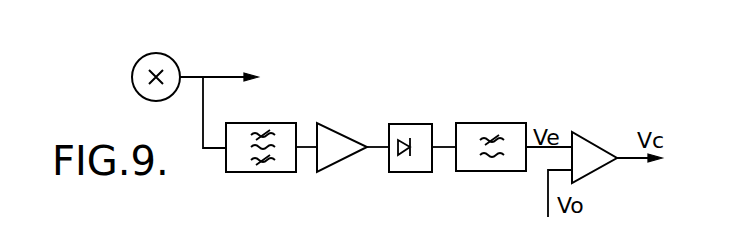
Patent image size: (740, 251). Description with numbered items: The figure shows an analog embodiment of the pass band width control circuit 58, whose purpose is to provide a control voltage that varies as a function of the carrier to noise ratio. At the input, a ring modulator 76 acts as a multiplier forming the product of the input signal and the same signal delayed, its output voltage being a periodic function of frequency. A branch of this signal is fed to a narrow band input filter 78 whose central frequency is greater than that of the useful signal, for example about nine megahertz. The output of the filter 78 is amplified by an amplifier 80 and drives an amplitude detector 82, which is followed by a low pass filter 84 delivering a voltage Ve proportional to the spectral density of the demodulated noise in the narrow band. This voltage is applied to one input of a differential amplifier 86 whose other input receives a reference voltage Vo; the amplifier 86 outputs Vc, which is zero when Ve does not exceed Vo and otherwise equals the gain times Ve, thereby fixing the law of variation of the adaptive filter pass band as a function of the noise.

The ring modulator 76 is at (172, 55).
The narrow band input filter 78 is at (240, 172).
The amplifier 80 is at (337, 160).
The pass band width control circuit 58 is at (341, 122).
The amplitude detector 82 is at (413, 172).
The low pass filter 84 is at (490, 172).
The differential amplifier 86 is at (590, 135).